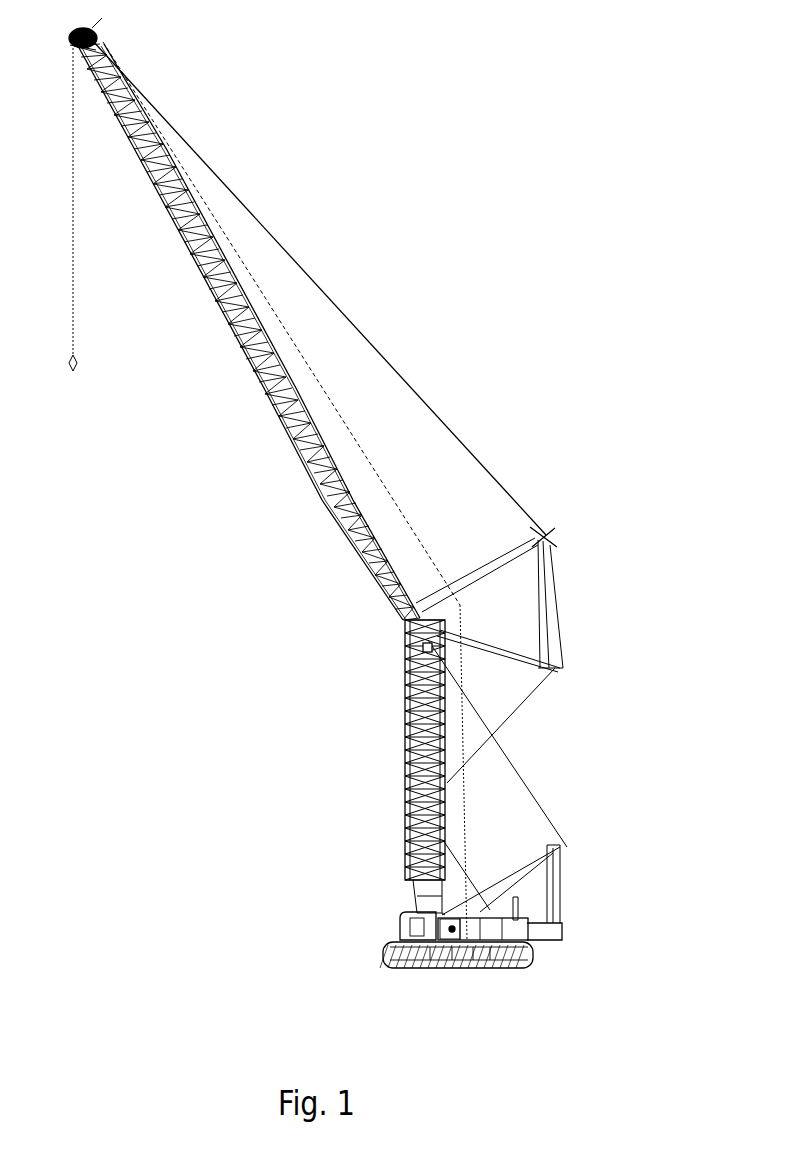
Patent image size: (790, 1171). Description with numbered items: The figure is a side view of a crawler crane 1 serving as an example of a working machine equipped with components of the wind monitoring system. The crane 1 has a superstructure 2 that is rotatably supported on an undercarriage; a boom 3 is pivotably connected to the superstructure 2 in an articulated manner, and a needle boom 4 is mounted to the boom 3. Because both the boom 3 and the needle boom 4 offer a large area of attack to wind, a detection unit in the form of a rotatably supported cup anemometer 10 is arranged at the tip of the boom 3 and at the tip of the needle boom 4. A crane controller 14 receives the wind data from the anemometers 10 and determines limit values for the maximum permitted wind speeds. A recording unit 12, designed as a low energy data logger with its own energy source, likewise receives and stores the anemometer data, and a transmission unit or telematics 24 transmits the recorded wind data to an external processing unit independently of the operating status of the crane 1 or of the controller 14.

The crawler crane 1 is at (596, 200).
The superstructure 2 is at (533, 942).
The boom 3 is at (405, 764).
The needle boom 4 is at (283, 421).
The detection unit (anemometer) 10 is at (107, 25).
The recording unit 12 is at (445, 628).
The crane controller 14 is at (440, 937).
The transmission unit or telematics 24 is at (450, 929).